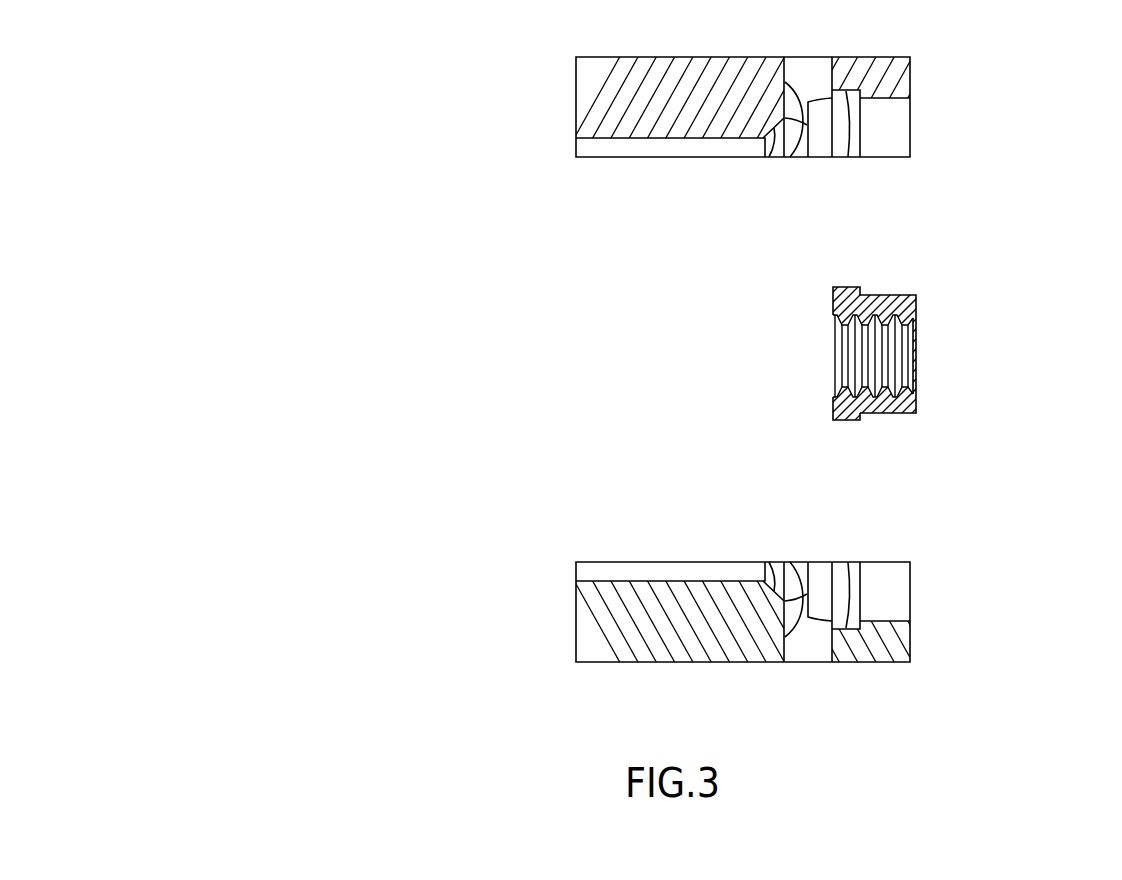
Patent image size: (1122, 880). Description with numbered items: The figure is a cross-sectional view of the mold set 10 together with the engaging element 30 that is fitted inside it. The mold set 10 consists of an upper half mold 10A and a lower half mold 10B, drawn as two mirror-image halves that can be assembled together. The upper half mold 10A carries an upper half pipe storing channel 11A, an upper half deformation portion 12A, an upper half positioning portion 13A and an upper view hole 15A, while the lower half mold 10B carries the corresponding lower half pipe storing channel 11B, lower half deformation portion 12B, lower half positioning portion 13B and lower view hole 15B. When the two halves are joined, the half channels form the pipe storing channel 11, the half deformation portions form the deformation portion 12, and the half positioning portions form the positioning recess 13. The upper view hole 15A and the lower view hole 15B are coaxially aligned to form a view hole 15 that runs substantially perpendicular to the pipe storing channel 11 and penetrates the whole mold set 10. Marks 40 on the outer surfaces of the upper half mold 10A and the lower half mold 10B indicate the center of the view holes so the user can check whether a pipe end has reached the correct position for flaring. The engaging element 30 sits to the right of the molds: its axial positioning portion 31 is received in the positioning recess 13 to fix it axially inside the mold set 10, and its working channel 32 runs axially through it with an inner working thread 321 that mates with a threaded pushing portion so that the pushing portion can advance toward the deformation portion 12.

The mold set 10 is at (243, 310).
The upper half mold 10A is at (576, 103).
The lower half mold 10B is at (576, 623).
The pipe storing channel 11 is at (370, 310).
The upper half pipe storing channel 11A is at (643, 143).
The lower half pipe storing channel 11B is at (662, 579).
The deformation portion 12 is at (490, 310).
The upper half deformation portion 12A is at (769, 157).
The lower half deformation portion 12B is at (769, 562).
The view hole 15 is at (617, 310).
The upper view hole 15A is at (790, 157).
The lower view hole 15B is at (790, 562).
The positioning recess 13 is at (741, 310).
The upper half positioning portion 13A is at (848, 157).
The lower half positioning portion 13B is at (847, 562).
The marks 40 is at (808, 57).
The engaging element 30 is at (1040, 220).
The axial positioning portion 31 is at (845, 288).
The working channel 32 is at (922, 326).
The inner working thread 321 is at (880, 322).